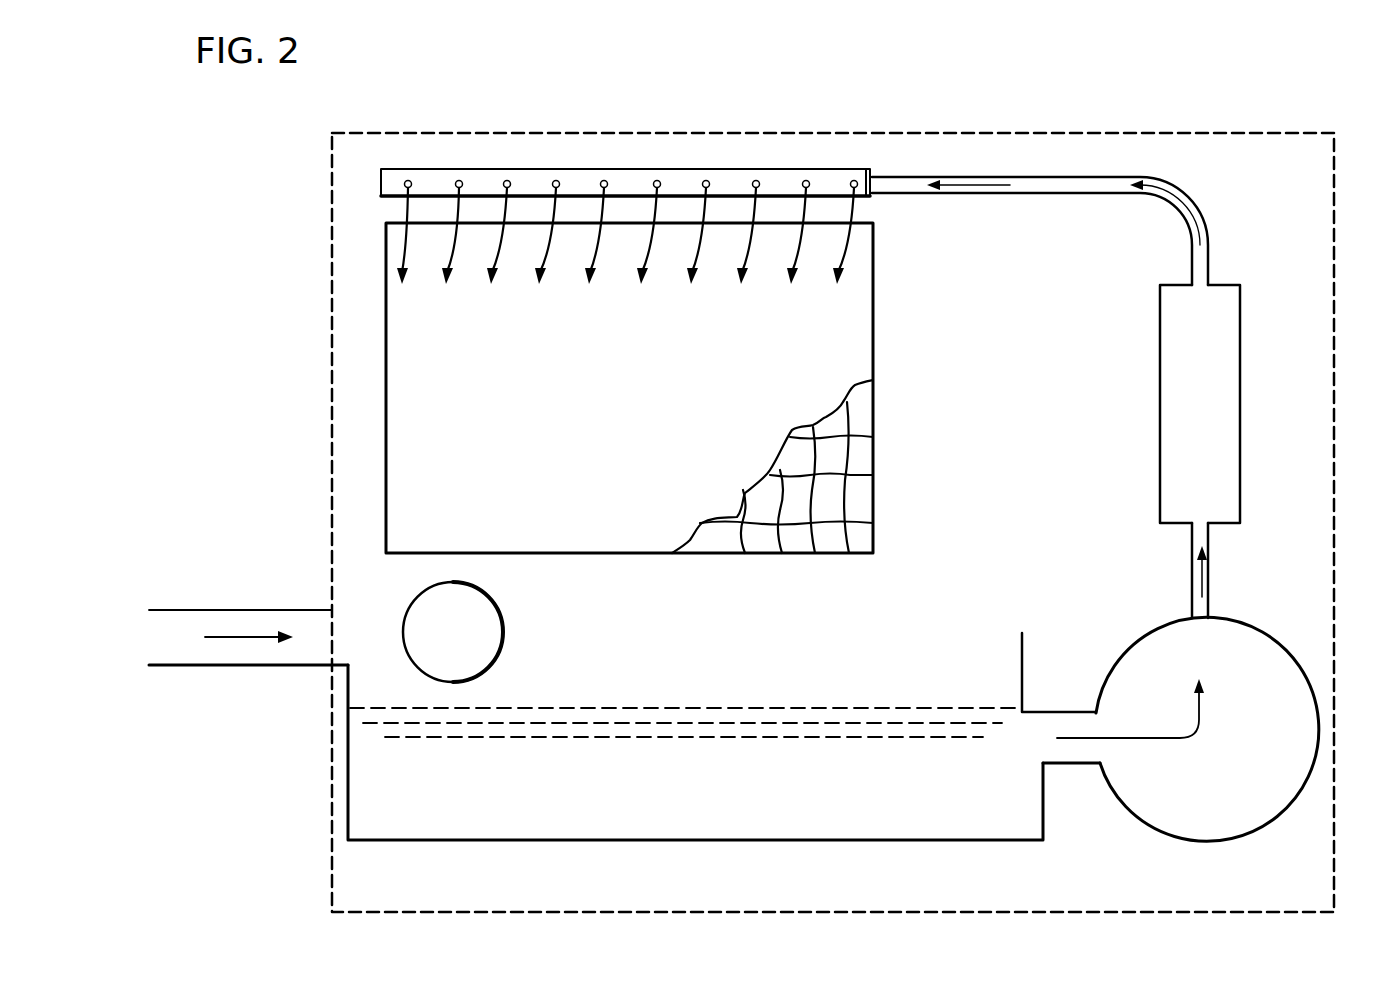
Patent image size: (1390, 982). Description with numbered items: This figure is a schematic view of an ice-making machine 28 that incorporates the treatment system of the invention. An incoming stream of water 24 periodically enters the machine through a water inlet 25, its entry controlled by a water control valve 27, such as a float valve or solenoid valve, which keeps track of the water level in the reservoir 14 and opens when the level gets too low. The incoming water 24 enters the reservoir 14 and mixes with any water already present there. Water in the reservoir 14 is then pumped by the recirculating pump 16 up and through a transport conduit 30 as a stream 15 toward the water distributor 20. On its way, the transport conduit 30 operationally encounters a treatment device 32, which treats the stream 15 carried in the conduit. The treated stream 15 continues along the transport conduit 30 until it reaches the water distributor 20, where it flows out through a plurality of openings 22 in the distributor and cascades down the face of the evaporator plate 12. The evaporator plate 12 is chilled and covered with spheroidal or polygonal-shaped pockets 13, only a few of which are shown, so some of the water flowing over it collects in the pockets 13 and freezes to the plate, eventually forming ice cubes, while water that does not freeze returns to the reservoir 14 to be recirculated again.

The evaporator plate 12 is at (386, 358).
The pockets 13 is at (860, 450).
The reservoir 14 is at (348, 815).
The stream 15 is at (958, 186).
The recirculating pump 16 is at (1308, 787).
The water distributor 20 is at (624, 186).
The openings 22 is at (412, 182).
The incoming stream of water 24 is at (208, 640).
The water inlet 25 is at (350, 628).
The water control valve 27 is at (505, 628).
The ice-making machine 28 is at (283, 245).
The transport conduit 30 is at (1208, 588).
The treatment device 32 is at (1240, 368).